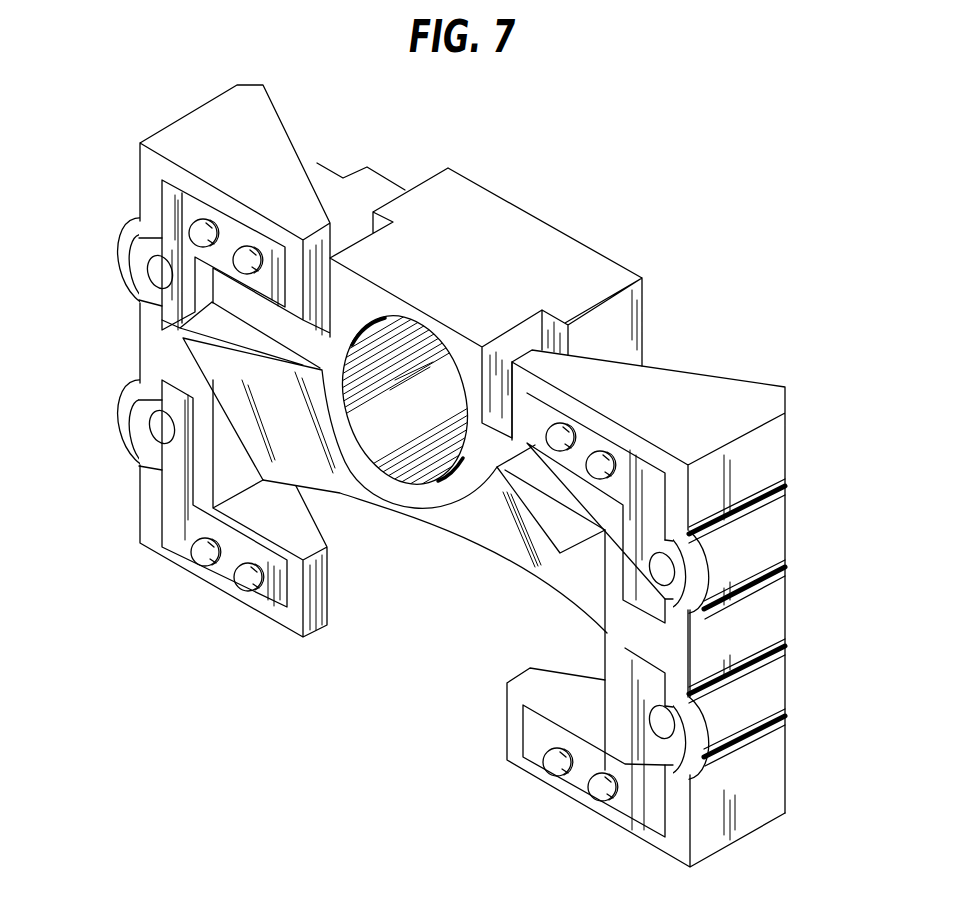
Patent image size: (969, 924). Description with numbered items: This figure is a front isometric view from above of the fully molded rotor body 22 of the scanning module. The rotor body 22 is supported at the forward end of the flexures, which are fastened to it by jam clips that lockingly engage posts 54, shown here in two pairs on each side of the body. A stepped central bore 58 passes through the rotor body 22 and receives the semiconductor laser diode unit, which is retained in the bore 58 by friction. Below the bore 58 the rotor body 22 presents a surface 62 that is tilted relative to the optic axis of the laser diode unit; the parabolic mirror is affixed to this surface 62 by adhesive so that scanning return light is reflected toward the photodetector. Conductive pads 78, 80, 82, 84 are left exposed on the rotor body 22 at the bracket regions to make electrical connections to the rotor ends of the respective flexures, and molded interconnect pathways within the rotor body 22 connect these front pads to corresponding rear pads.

The rotor body 22 is at (452, 284).
The posts 54 is at (245, 252).
The stepped central bore 58 is at (393, 440).
The surface 62 is at (490, 520).
The pad 78 is at (650, 504).
The pad 80 is at (652, 803).
The pad 82 is at (167, 228).
The pad 84 is at (168, 488).